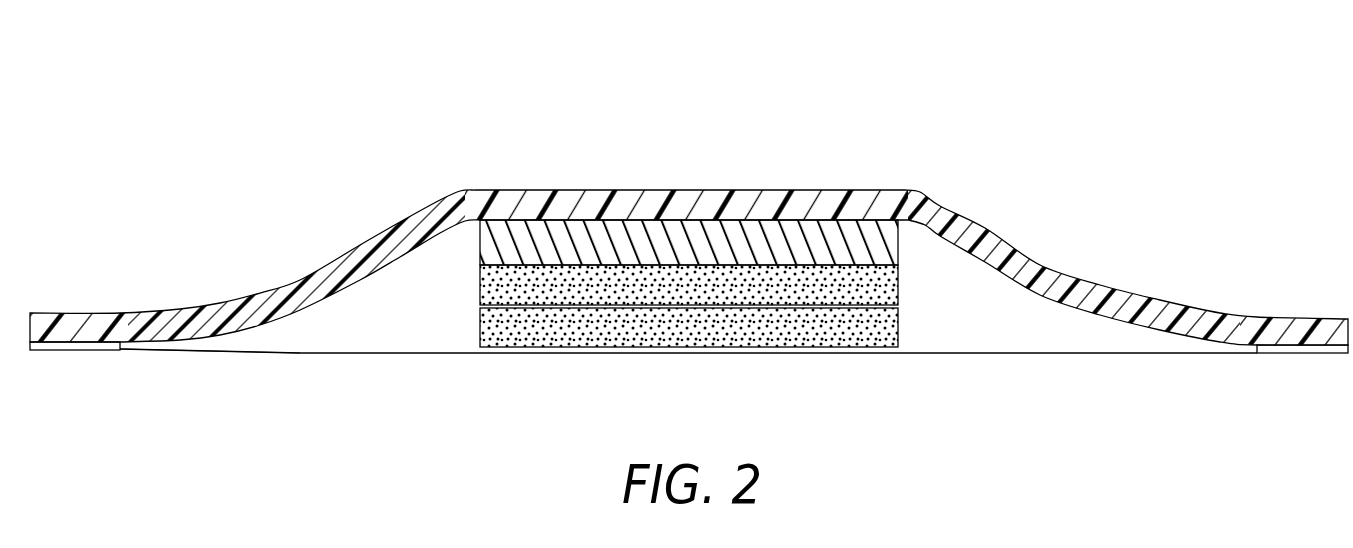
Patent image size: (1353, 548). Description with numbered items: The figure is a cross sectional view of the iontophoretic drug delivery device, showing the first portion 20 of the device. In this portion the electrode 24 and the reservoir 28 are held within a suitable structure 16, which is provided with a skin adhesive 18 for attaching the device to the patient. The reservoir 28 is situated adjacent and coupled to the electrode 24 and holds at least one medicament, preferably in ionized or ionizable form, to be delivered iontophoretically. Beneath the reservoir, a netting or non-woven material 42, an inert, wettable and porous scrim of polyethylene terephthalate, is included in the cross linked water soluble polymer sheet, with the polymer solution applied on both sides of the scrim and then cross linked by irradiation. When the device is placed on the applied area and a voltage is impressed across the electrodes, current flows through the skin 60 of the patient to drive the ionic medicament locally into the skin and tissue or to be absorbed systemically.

The structure 16 is at (1072, 283).
The skin adhesive 18 is at (82, 348).
The first portion 20 is at (686, 252).
The electrode 24 is at (797, 243).
The reservoir 28 is at (466, 288).
The netting or non-woven material 42 is at (900, 310).
The skin 60 is at (277, 354).